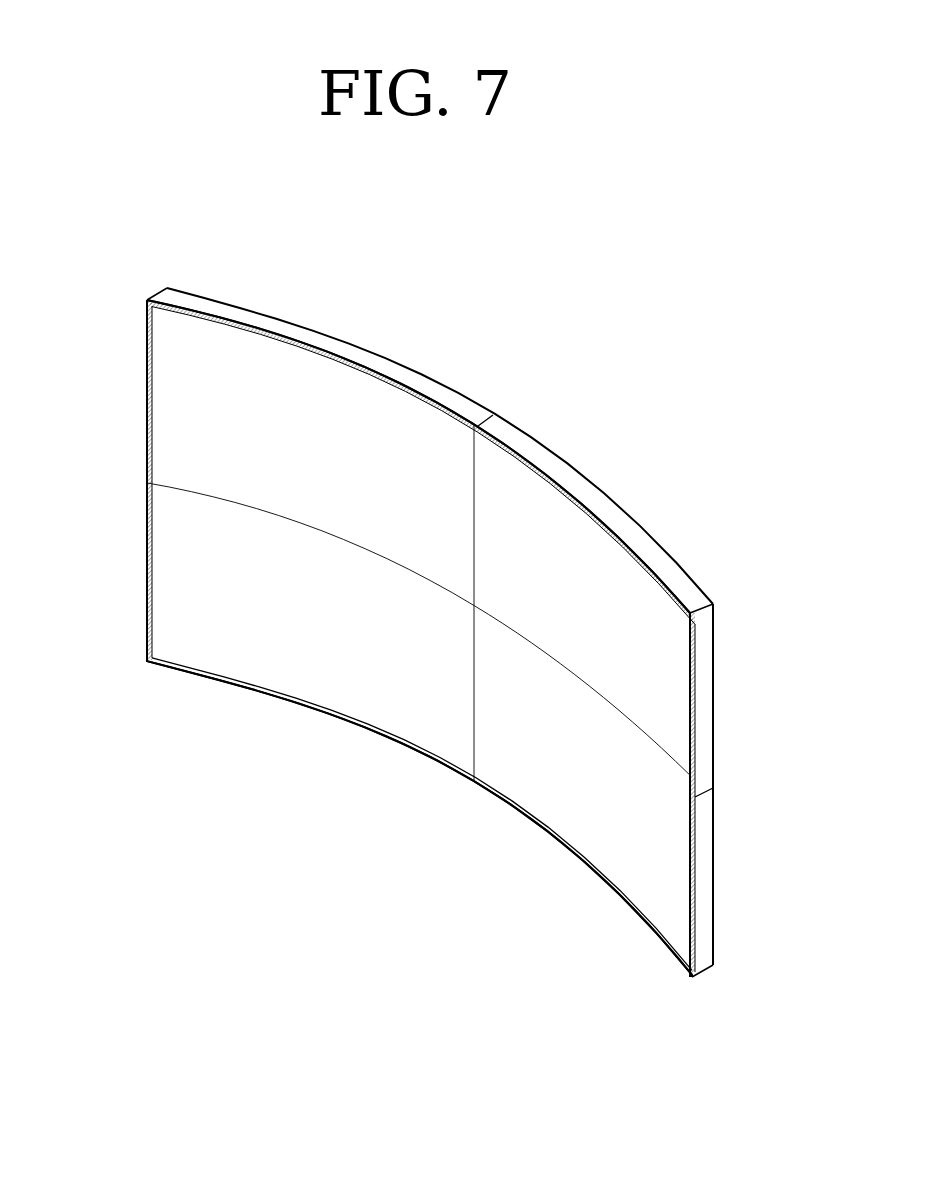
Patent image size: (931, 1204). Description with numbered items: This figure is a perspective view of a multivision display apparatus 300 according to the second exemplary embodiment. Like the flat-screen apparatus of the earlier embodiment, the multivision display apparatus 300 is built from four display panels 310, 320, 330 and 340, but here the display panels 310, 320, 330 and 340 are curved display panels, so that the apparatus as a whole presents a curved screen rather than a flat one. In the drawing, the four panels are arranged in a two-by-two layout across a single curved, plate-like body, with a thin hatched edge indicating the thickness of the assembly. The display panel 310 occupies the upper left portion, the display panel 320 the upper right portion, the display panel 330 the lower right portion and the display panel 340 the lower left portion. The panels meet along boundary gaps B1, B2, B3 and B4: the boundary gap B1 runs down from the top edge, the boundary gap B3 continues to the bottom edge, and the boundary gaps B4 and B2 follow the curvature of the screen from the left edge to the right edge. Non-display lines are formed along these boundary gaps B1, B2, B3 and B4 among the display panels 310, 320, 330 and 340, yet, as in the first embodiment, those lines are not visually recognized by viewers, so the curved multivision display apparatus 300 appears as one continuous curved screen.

The multivision display apparatus 300 is at (317, 233).
The display panel 310 is at (185, 373).
The display panel 320 is at (672, 670).
The display panel 330 is at (672, 867).
The display panel 340 is at (185, 602).
The boundary gap B1 is at (476, 485).
The boundary gap B2 is at (657, 750).
The boundary gap B3 is at (476, 747).
The boundary gap B4 is at (185, 490).